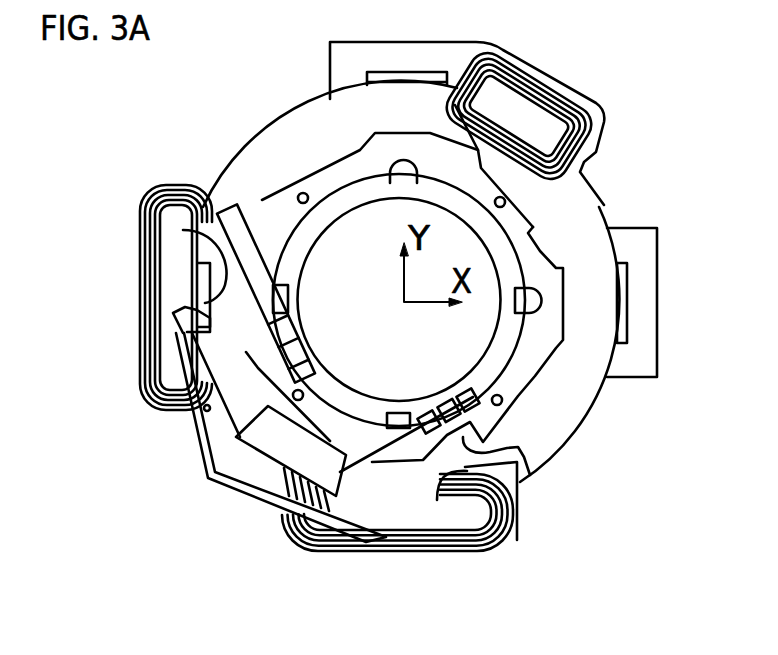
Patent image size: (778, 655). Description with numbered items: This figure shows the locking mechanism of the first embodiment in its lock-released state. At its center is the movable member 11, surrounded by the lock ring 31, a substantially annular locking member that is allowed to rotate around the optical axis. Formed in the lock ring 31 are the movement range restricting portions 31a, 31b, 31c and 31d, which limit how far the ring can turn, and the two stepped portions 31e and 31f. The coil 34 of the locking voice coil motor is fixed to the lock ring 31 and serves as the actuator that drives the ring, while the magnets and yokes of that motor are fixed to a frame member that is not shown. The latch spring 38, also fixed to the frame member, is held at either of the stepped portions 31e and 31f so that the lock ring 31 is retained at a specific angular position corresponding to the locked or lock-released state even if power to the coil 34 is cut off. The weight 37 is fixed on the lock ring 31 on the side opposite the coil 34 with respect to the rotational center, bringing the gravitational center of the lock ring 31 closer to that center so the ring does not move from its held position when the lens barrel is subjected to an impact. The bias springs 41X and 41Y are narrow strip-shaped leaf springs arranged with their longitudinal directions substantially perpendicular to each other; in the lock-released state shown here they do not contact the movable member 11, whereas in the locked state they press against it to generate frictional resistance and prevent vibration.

The movable member 11 is at (537, 357).
The lock ring 31 is at (562, 420).
The movement range restricting portion 31a is at (250, 350).
The movement range restricting portion 31b is at (527, 437).
The movement range restricting portion 31c is at (540, 237).
The movement range restricting portion 31d is at (343, 158).
The stepped portion 31e is at (183, 231).
The stepped portion 31f is at (456, 541).
The coil 34 is at (550, 86).
The weight 37 is at (287, 453).
The latch spring 38 is at (200, 440).
The bias spring 41X is at (413, 470).
The bias spring 41Y is at (230, 222).